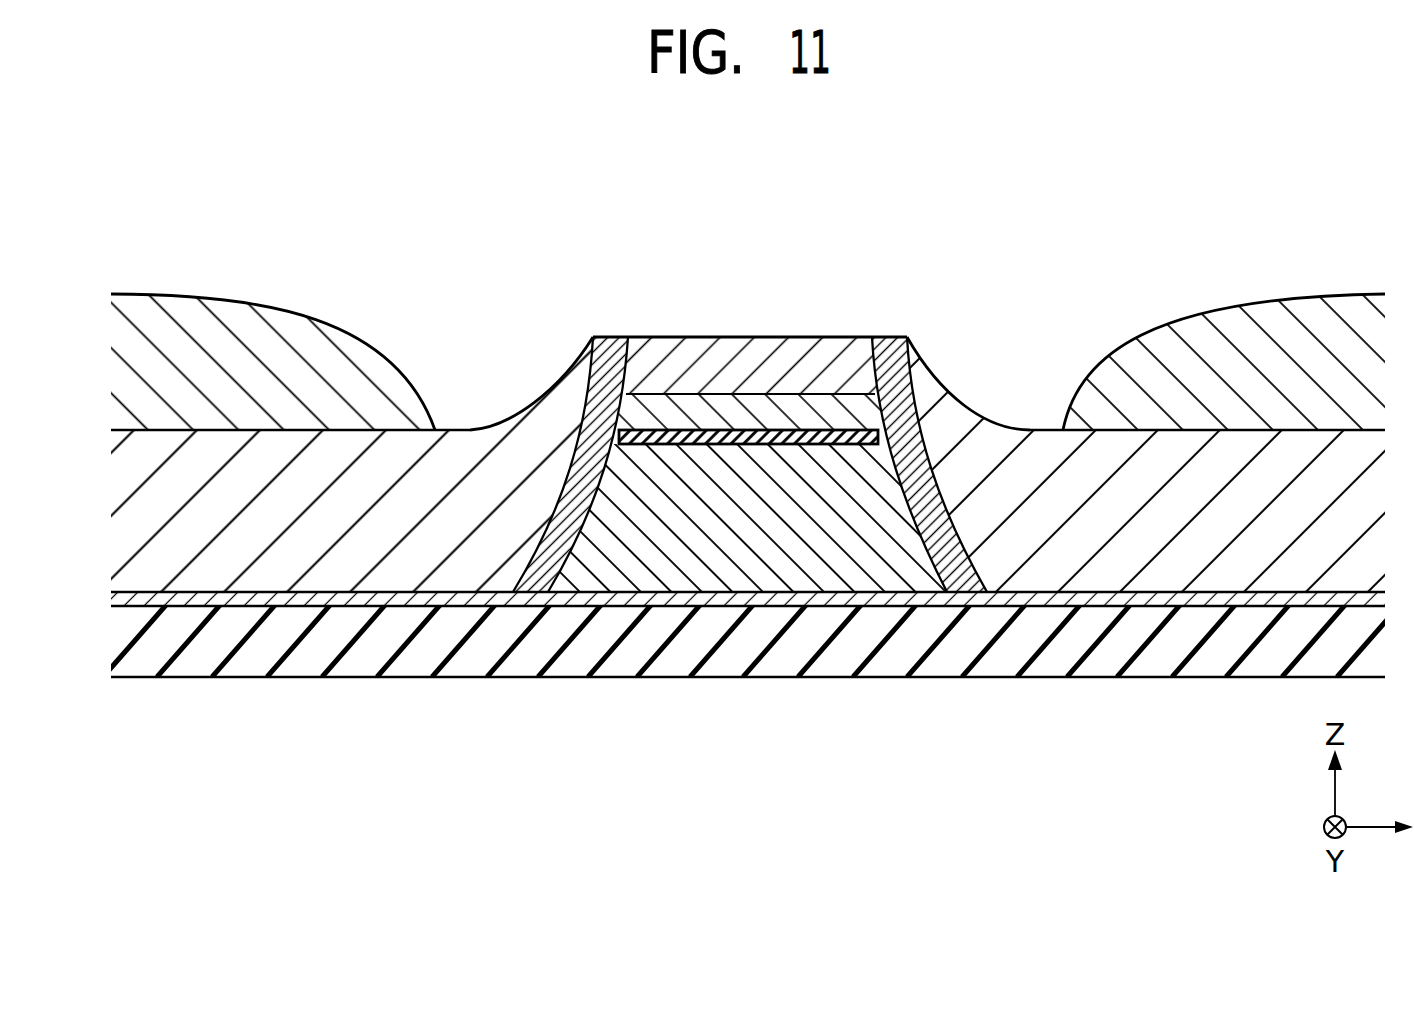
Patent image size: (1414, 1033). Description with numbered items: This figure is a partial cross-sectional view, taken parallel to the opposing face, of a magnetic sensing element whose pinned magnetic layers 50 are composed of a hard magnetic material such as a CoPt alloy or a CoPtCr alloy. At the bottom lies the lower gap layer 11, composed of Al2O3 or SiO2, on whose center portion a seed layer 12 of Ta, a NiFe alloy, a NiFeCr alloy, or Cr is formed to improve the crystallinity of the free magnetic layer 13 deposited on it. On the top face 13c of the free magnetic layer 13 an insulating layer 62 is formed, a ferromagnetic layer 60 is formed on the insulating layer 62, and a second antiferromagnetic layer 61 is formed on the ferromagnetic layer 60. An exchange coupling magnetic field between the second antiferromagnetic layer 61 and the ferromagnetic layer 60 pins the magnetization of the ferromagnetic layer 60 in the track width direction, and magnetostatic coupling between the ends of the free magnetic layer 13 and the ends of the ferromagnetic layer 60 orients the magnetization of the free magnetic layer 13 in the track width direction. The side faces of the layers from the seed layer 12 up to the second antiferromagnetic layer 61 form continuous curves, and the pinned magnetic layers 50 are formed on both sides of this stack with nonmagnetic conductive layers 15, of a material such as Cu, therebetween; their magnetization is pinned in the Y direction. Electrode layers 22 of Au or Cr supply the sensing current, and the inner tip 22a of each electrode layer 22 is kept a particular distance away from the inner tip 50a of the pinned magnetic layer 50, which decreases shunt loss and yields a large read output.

The lower gap layer 11 is at (920, 640).
The seed layer 12 is at (818, 598).
The free magnetic layer 13 is at (695, 508).
The top face of the free magnetic layer 13c is at (774, 432).
The nonmagnetic conductive layers 15 is at (523, 592).
The electrode layer 22 is at (297, 372).
The inner tip of the electrode layer 22a is at (401, 392).
The pinned magnetic layers 50 is at (303, 498).
The inner tip of the pinned magnetic layer 50a is at (562, 398).
The ferromagnetic layer 60 is at (750, 319).
The second antiferromagnetic layer 61 is at (650, 370).
The insulating layer 62 is at (855, 432).